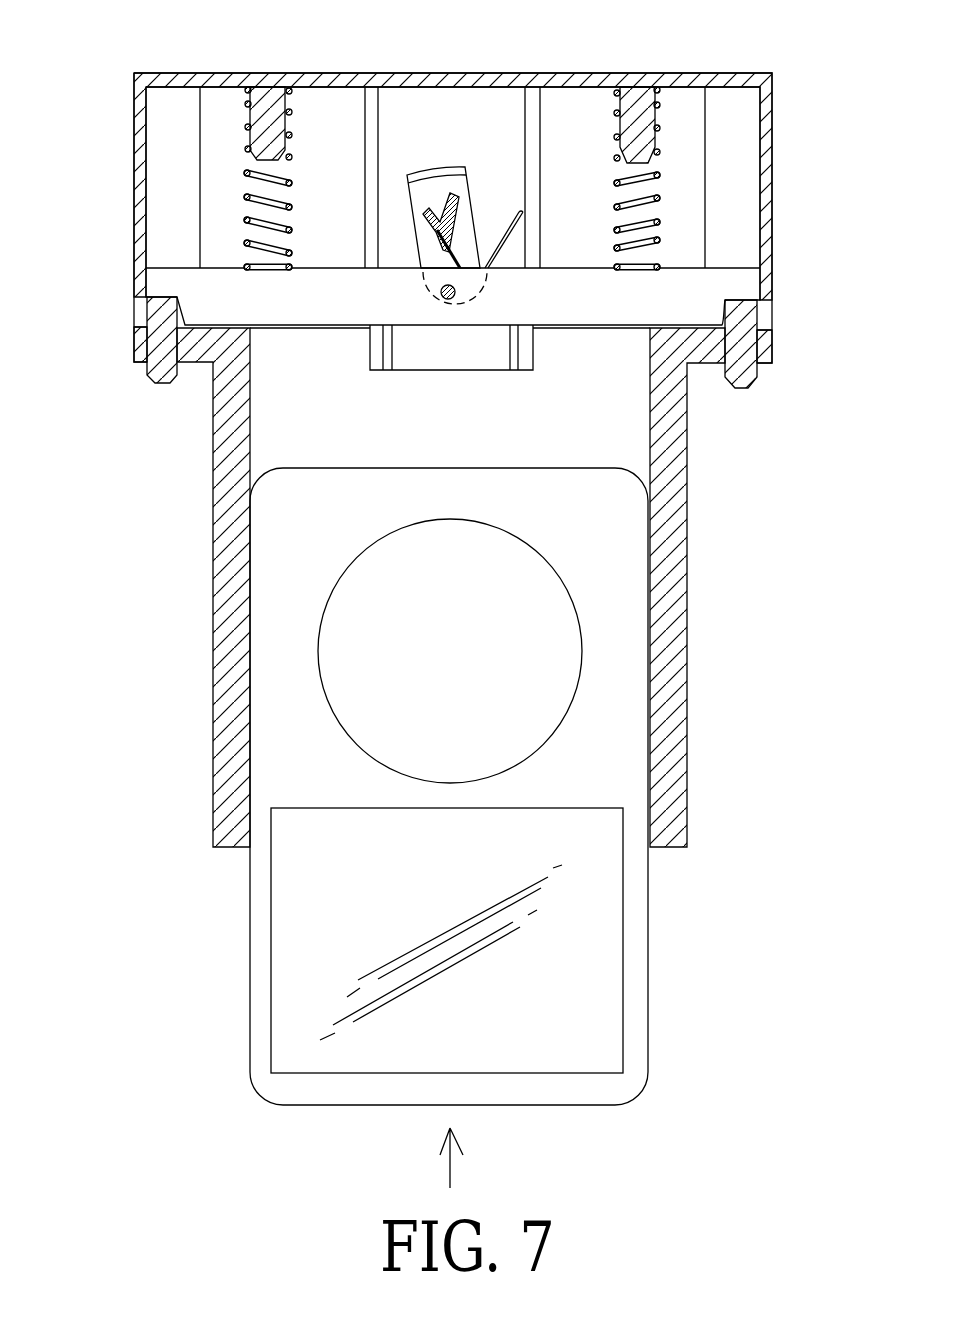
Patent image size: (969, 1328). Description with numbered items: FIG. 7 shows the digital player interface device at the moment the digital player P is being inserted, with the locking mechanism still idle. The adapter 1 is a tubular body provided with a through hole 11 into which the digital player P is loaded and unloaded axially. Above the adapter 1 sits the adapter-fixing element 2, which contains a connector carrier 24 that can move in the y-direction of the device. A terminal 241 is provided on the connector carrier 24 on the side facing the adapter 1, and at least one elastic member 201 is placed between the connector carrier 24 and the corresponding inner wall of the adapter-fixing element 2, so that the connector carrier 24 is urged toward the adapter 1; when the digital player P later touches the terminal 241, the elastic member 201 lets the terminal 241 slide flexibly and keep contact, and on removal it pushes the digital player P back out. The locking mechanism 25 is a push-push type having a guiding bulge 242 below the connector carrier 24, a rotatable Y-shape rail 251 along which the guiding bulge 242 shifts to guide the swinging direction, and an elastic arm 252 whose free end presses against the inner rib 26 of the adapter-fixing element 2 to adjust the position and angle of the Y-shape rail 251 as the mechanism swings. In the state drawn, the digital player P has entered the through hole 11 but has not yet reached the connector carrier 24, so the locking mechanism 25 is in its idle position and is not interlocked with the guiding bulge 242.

The adapter 1 is at (687, 663).
The through hole 11 is at (600, 418).
The adapter-fixing element 2 is at (772, 132).
The elastic member 201 is at (247, 173).
The connector carrier 24 is at (176, 281).
The terminal 241 is at (421, 352).
The guiding bulge 242 is at (458, 300).
The locking mechanism 25 is at (488, 171).
The Y-shape rail 251 is at (440, 243).
The elastic arm 252 is at (508, 242).
The inner rib 26 is at (535, 113).
The digital player P is at (627, 950).